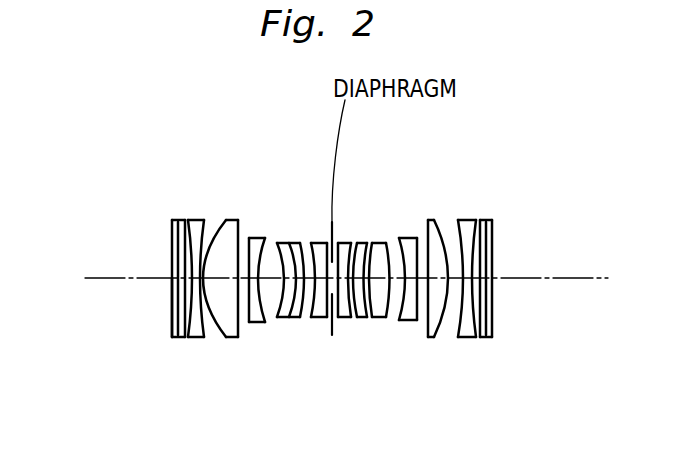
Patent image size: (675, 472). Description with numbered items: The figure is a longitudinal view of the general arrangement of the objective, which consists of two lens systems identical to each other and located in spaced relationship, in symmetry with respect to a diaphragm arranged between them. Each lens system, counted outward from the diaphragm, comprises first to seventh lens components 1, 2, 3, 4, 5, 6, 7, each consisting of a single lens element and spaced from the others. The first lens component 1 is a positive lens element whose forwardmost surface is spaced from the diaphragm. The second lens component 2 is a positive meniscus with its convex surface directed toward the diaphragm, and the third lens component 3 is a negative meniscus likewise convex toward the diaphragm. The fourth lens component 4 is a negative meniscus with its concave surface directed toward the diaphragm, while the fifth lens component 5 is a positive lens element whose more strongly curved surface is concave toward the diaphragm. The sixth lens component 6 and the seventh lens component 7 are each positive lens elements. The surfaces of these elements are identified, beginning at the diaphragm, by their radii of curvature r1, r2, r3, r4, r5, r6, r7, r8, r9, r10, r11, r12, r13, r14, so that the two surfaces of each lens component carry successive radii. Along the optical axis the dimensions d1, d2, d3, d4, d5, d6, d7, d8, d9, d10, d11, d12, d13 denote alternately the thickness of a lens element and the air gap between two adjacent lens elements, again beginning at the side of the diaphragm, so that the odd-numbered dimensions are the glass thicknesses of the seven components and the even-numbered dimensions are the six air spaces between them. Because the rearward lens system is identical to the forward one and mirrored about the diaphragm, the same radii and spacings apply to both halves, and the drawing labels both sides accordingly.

The first lens component 1 is at (312, 242).
The second lens component 2 is at (280, 242).
The third lens component 3 is at (250, 240).
The fourth lens component 4 is at (225, 240).
The fifth lens component 5 is at (235, 256).
The sixth lens component 6 is at (250, 260).
The seventh lens component 7 is at (202, 262).
The radius of curvature of first surface r1 is at (328, 242).
The radius of curvature of second surface r2 is at (313, 242).
The radius of curvature of third surface r3 is at (301, 242).
The radius of curvature of fourth surface r4 is at (288, 242).
The radius of curvature of fifth surface r5 is at (267, 238).
The radius of curvature of sixth surface r6 is at (249, 238).
The radius of curvature of seventh surface r7 is at (234, 220).
The radius of curvature of eighth surface r8 is at (218, 223).
The radius of curvature of ninth surface r9 is at (200, 220).
The radius of curvature of tenth surface r10 is at (192, 221).
The radius of curvature of eleventh surface r11 is at (176, 218).
The radius of curvature of twelfth surface r12 is at (184, 220).
The radius of curvature of thirteenth surface r13 is at (173, 222).
The radius of curvature of fourteenth surface r14 is at (173, 228).
The first axial thickness d1 is at (345, 318).
The first air gap d2 is at (308, 318).
The second lens thickness d3 is at (295, 318).
The second air gap d4 is at (278, 318).
The third lens thickness d5 is at (265, 323).
The third air gap d6 is at (250, 324).
The fourth lens thickness d7 is at (238, 339).
The fourth air gap d8 is at (223, 336).
The fifth lens thickness d9 is at (203, 338).
The fifth air gap d10 is at (193, 335).
The sixth lens thickness d11 is at (180, 341).
The sixth air gap d12 is at (180, 339).
The seventh lens thickness d13 is at (175, 306).